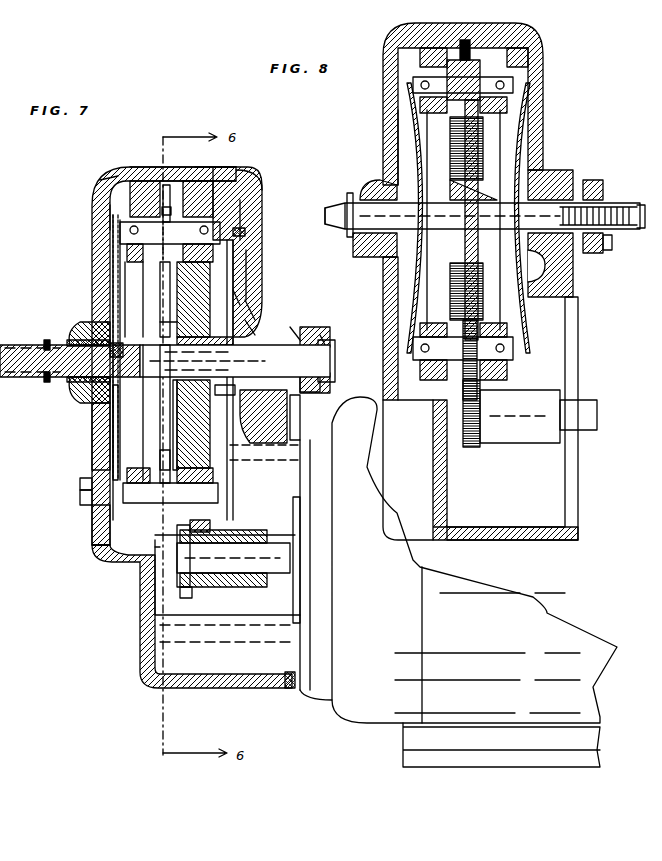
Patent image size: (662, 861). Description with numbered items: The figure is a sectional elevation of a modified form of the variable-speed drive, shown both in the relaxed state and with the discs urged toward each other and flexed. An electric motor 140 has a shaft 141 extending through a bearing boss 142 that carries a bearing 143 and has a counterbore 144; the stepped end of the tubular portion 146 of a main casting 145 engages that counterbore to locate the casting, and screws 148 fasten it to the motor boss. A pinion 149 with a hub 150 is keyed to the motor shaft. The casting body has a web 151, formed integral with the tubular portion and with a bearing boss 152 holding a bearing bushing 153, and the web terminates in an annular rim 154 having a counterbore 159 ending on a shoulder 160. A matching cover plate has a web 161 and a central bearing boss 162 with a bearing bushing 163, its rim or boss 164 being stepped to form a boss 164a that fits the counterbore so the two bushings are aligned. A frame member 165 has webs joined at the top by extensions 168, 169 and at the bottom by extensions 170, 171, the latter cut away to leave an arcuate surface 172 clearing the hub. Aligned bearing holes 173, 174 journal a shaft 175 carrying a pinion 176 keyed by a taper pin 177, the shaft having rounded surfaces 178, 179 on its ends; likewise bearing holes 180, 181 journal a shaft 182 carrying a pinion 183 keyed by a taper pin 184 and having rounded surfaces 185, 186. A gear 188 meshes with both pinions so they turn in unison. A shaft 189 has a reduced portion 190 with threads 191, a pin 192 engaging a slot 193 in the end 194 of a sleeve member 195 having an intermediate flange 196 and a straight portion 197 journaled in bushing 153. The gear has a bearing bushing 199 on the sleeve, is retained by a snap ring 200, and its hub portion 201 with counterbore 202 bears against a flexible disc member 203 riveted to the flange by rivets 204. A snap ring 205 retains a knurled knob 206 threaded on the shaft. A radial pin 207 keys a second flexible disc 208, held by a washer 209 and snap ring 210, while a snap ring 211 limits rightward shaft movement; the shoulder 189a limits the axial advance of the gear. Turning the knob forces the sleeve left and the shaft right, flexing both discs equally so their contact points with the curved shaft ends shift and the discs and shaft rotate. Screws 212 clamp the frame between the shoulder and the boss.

In FIG. 7, the electric motor 140 is at (362, 725).
In FIG. 7, the motor shaft 141 is at (290, 590).
In FIG. 8, the motor shaft 141 is at (588, 402).
In FIG. 7, the bearing boss 142 is at (298, 440).
In FIG. 7, the bearing 143 is at (302, 566).
In FIG. 7, the counterbore 144 is at (290, 688).
In FIG. 7, the main casting 145 is at (255, 303).
In FIG. 7, the tubular portion 146 is at (265, 440).
In FIG. 7, the screws 148 is at (218, 648).
In FIG. 7, the pinion 149 is at (182, 598).
In FIG. 8, the pinion 149 is at (478, 447).
In FIG. 7, the hub 150 is at (222, 587).
In FIG. 8, the hub 150 is at (540, 443).
In FIG. 7, the web 151 is at (248, 268).
In FIG. 7, the bearing boss 152 is at (293, 330).
In FIG. 7, the bearing bushing 153 is at (300, 332).
In FIG. 7, the annular rim 154 is at (252, 172).
In FIG. 7, the counterbore 159 is at (188, 175).
In FIG. 7, the shoulder 160 is at (256, 187).
In FIG. 7, the web of cover plate 161 is at (97, 250).
In FIG. 7, the central bearing boss 162 is at (84, 326).
In FIG. 7, the bearing bushing 163 is at (82, 395).
In FIG. 8, the bearing bushing 163 is at (380, 195).
In FIG. 7, the annular rim or boss 164 is at (118, 166).
In FIG. 7, the boss 164a is at (138, 182).
In FIG. 7, the frame member 165 is at (116, 291).
In FIG. 7, the extension 168 is at (100, 188).
In FIG. 7, the extension 169 is at (222, 173).
In FIG. 7, the extension 170 is at (130, 560).
In FIG. 7, the extension 171 is at (212, 528).
In FIG. 7, the arcuate surface 172 is at (200, 545).
In FIG. 7, the bearing hole 173 is at (110, 212).
In FIG. 7, the bearing hole 174 is at (246, 214).
In FIG. 7, the shaft 175 is at (170, 241).
In FIG. 8, the shaft 175 is at (505, 80).
In FIG. 7, the pinion 176 is at (168, 184).
In FIG. 8, the pinion 176 is at (478, 70).
In FIG. 7, the taper pin 177 is at (165, 262).
In FIG. 7, the rounded surface 178 is at (246, 232).
In FIG. 7, the rounded surface 179 is at (115, 236).
In FIG. 7, the bearing hole 180 is at (95, 544).
In FIG. 7, the bearing hole 181 is at (250, 533).
In FIG. 7, the shaft 182 is at (124, 505).
In FIG. 8, the shaft 182 is at (500, 348).
In FIG. 7, the pinion 183 is at (200, 567).
In FIG. 8, the pinion 183 is at (495, 380).
In FIG. 7, the taper pin 184 is at (164, 470).
In FIG. 7, the rounded surface 185 is at (245, 485).
In FIG. 7, the rounded surface 186 is at (82, 500).
In FIG. 7, the gear 188 is at (178, 296).
In FIG. 8, the gear 188 is at (480, 150).
In FIG. 7, the shaft 189 is at (30, 378).
In FIG. 8, the shaft 189 is at (345, 230).
In FIG. 7, the shoulder 189a is at (150, 410).
In FIG. 8, the shoulder 189a is at (482, 216).
In FIG. 7, the portion of reduced diameter 190 is at (148, 420).
In FIG. 7, the threads 191 is at (322, 360).
In FIG. 8, the threads 191 is at (640, 208).
In FIG. 7, the pin 192 is at (170, 356).
In FIG. 7, the slot 193 is at (235, 361).
In FIG. 7, the end of sleeve member 194 is at (176, 410).
In FIG. 7, the sleeve member 195 is at (250, 322).
In FIG. 7, the intermediate flange 196 is at (243, 301).
In FIG. 8, the intermediate flange 196 is at (510, 252).
In FIG. 7, the straight portion 197 is at (318, 330).
In FIG. 7, the bearing bushing 199 is at (162, 318).
In FIG. 7, the snap ring 200 is at (174, 420).
In FIG. 7, the hub portion 201 is at (178, 300).
In FIG. 7, the counterbore 202 is at (222, 395).
In FIG. 7, the flexible disc member 203 is at (234, 256).
In FIG. 8, the flexible disc member 203 is at (530, 120).
In FIG. 8, the rivets 204 is at (515, 190).
In FIG. 7, the snap ring 205 is at (325, 341).
In FIG. 8, the snap ring 205 is at (636, 229).
In FIG. 7, the knurled knob 206 is at (320, 384).
In FIG. 8, the knurled knob 206 is at (590, 182).
In FIG. 7, the radial pin 207 is at (70, 361).
In FIG. 7, the second flexible disc 208 is at (116, 442).
In FIG. 8, the second flexible disc 208 is at (410, 138).
In FIG. 7, the washer 209 is at (100, 322).
In FIG. 8, the washer 209 is at (418, 185).
In FIG. 7, the snap ring 210 is at (112, 420).
In FIG. 8, the snap ring 210 is at (405, 262).
In FIG. 7, the snap ring 211 is at (46, 341).
In FIG. 8, the snap ring 211 is at (349, 193).
In FIG. 7, the screws 212 is at (80, 482).